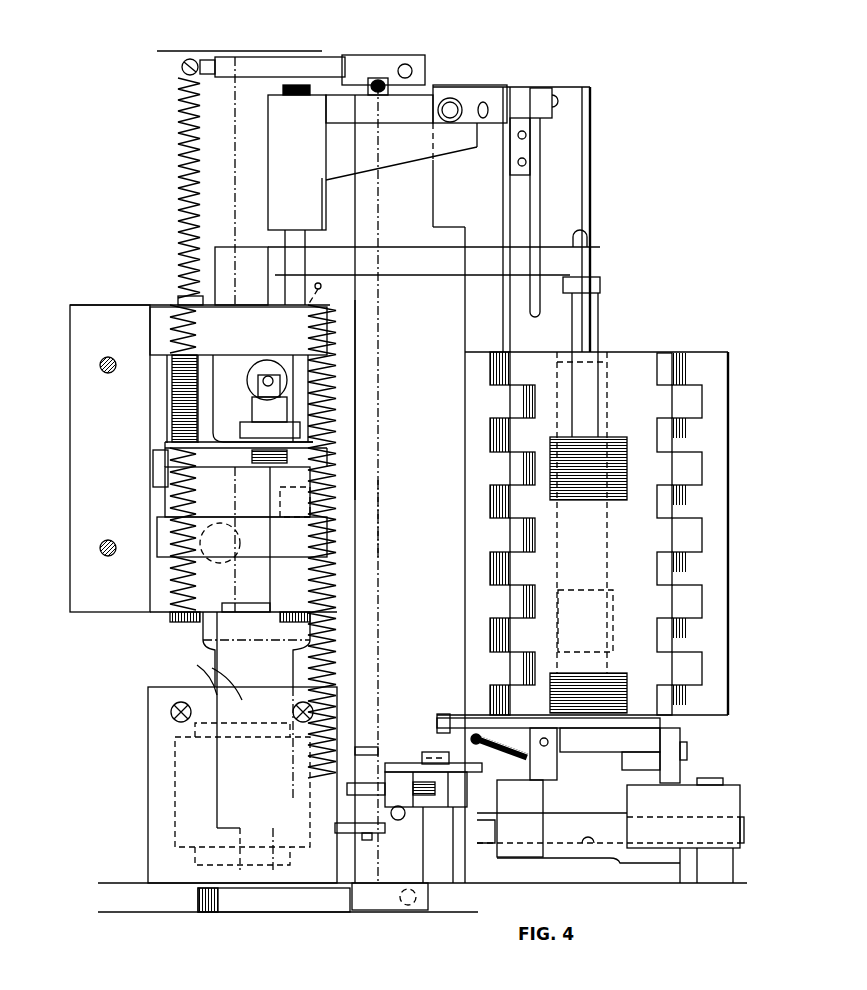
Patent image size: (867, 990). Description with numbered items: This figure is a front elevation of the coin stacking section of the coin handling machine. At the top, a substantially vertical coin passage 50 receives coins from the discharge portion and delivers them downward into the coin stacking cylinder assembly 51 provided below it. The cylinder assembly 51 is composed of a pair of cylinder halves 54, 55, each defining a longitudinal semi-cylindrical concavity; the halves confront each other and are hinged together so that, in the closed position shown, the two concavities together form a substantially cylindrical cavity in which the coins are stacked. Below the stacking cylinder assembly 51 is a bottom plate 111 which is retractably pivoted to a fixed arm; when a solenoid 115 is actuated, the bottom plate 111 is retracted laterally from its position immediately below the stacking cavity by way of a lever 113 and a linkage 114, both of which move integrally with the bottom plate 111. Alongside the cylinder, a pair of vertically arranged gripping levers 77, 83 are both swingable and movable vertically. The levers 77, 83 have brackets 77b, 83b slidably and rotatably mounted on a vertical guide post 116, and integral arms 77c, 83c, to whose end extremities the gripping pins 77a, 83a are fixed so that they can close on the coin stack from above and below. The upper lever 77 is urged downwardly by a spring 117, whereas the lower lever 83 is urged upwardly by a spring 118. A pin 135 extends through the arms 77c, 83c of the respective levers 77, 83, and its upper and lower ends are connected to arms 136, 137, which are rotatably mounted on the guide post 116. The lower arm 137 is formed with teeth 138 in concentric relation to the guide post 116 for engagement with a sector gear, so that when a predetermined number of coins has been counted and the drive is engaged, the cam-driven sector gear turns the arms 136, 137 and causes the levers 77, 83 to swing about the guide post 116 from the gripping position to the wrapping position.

The coin passage 50 is at (590, 149).
The coin stacking cylinder assembly 51 is at (683, 352).
The cylinder half 54 is at (480, 474).
The cylinder half 55 is at (705, 710).
The gripping lever 77 is at (428, 272).
The gripping pin 77a is at (601, 320).
The bracket 77b is at (213, 268).
The arm 77c is at (407, 247).
The gripping lever 83 is at (398, 827).
The gripping pin 83a is at (608, 768).
The bracket 83b is at (213, 652).
The arm 83c is at (465, 827).
The bottom plate 111 is at (458, 717).
The lever 113 is at (470, 752).
The linkage 114 is at (402, 757).
The solenoid 115 is at (173, 817).
The guide post 116 is at (233, 133).
The spring 117 is at (340, 398).
The spring 118 is at (180, 168).
The pin 135 is at (378, 520).
The arm 136 is at (339, 40).
The arm 137 is at (297, 912).
The teeth 138 is at (205, 912).